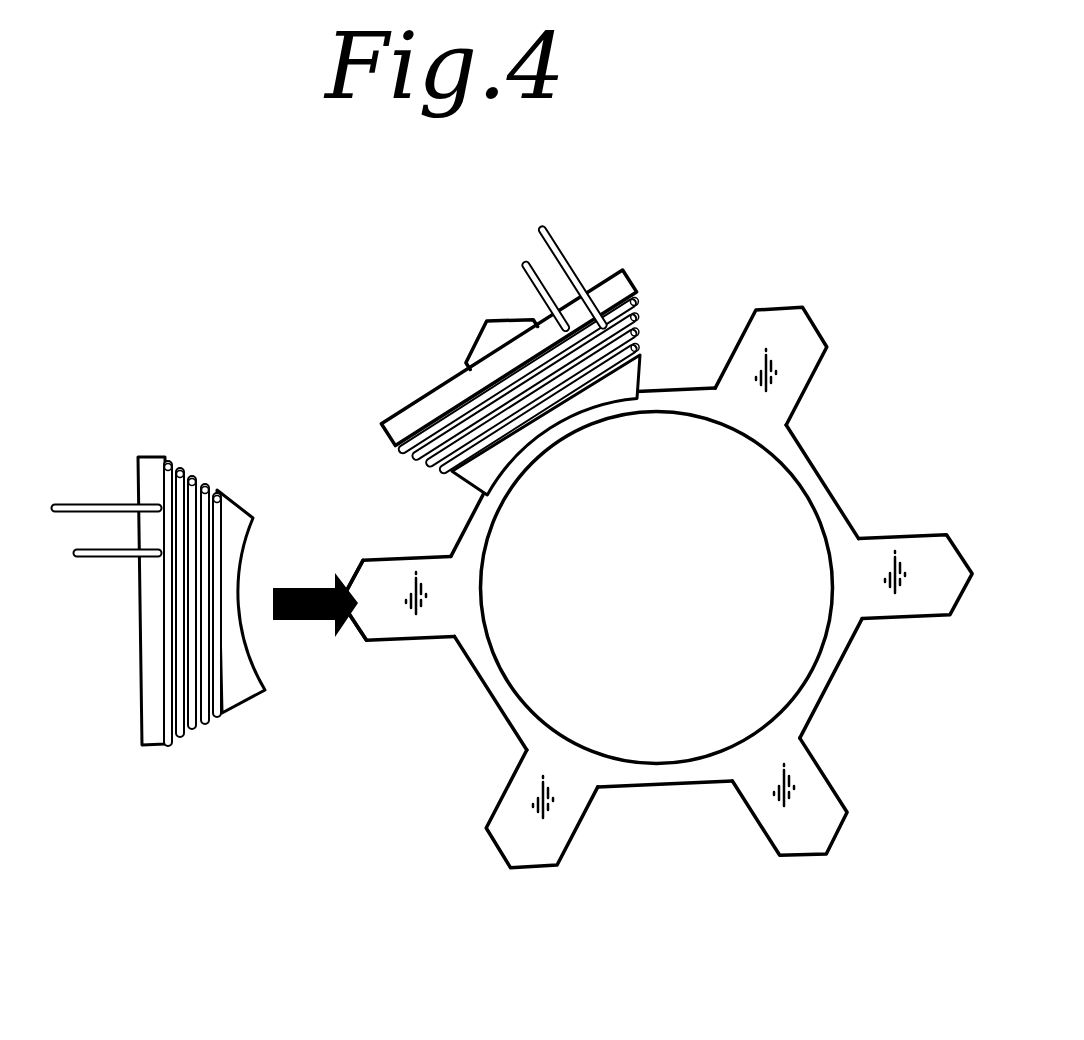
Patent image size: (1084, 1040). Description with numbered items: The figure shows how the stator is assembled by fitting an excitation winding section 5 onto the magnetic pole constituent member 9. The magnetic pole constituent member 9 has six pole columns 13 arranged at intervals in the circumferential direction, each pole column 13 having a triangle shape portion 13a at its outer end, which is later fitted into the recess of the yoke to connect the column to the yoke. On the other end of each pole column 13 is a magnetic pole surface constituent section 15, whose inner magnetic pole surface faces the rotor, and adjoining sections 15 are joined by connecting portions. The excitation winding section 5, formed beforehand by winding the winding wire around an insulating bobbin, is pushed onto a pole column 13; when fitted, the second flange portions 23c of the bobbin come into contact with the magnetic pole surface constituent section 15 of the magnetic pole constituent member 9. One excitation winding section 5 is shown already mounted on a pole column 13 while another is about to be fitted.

The magnetic pole constituent member 9 is at (656, 509).
The pole column 13 is at (487, 335).
The triangle shape portion 13a is at (466, 362).
The magnetic pole surface constituent section 15 is at (558, 437).
The excitation winding section 5 is at (396, 487).
The second flange portion 23c is at (238, 518).